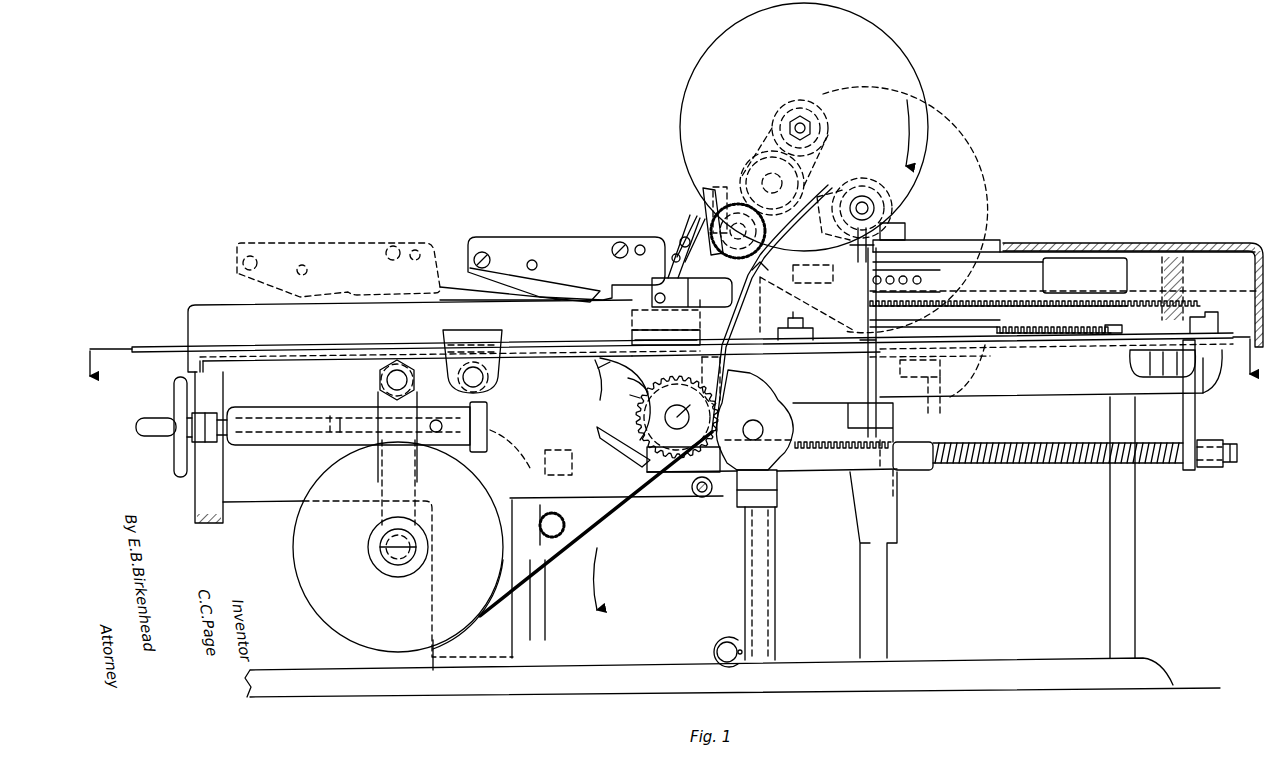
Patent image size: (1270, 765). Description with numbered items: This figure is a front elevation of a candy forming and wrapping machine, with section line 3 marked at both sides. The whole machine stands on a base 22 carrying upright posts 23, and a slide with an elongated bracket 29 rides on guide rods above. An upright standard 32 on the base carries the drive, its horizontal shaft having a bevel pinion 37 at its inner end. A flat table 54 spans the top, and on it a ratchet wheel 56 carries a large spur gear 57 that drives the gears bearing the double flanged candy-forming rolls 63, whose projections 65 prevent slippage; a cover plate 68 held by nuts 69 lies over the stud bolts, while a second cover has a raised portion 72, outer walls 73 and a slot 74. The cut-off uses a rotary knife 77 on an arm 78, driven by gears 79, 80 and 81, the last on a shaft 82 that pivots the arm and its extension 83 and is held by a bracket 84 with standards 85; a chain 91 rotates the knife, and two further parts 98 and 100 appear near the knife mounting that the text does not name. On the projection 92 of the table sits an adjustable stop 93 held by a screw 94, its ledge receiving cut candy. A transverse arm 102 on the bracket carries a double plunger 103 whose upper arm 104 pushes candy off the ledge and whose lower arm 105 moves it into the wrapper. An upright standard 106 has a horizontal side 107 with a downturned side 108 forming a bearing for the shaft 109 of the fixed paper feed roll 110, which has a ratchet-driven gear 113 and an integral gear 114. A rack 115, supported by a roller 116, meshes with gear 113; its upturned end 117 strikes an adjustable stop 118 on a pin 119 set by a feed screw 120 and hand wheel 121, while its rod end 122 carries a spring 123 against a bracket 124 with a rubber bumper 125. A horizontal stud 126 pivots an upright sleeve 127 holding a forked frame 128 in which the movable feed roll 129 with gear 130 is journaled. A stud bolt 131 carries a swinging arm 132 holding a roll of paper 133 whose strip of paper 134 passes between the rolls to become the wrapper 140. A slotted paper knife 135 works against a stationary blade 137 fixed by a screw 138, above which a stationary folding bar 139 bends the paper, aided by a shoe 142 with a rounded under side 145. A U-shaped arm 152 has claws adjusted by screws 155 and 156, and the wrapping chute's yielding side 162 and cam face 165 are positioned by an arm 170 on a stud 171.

The section line 3 is at (671, 368).
The base 22 is at (732, 677).
The upright posts 23 is at (665, 515).
The elongated bracket 29 is at (713, 427).
The upright standard 32 is at (532, 616).
The bevel pinion 37 is at (560, 520).
The flat table 54 is at (143, 350).
The ratchet wheel 56 is at (1060, 340).
The large spur gear 57 is at (1048, 292).
The double flanged candy-forming roll 63 is at (932, 270).
The projections 65 is at (921, 281).
The cover plate 68 is at (917, 243).
The nuts 69 is at (905, 229).
The raised portion 72 is at (1140, 243).
The outer walls 73 is at (1255, 304).
The slot 74 is at (990, 252).
The rotary knife 77 is at (982, 154).
The arm 78 is at (795, 182).
The gear 79 is at (828, 124).
The gear 80 is at (748, 165).
The gear 81 is at (745, 196).
The shaft 82 is at (738, 232).
The extension 83 is at (703, 205).
The bracket 84 is at (788, 323).
The standards 85 is at (766, 286).
The chain 91 is at (680, 230).
The projection 92 is at (826, 344).
The adjustable stop 93 is at (857, 342).
The screw 94 is at (800, 318).
The bracket 98 is at (856, 255).
The member 100 is at (772, 271).
The transverse arm 102 is at (1218, 390).
The double plunger 103 is at (1159, 288).
The upper arm 104 is at (960, 275).
The lower arm 105 is at (632, 318).
The upright standard 106 is at (580, 380).
The upper horizontal side 107 is at (275, 353).
The downturned side 108 is at (657, 398).
The shaft 109 is at (681, 409).
The fixed rotatable paper feed roll 110 is at (636, 414).
The gear 113 is at (636, 378).
The gear 114 is at (638, 395).
The rack 115 is at (843, 451).
The roller 116 is at (703, 497).
The upturned end 117 is at (570, 451).
The adjustable stop 118 is at (487, 415).
The pin 119 is at (425, 424).
The feed screw 120 is at (222, 442).
The hand wheel 121 is at (180, 460).
The rod end 122 is at (1040, 446).
The spring 123 is at (1052, 460).
The bracket 124 is at (1195, 420).
The rubber bumper 125 is at (1208, 467).
The horizontal stud 126 is at (712, 650).
The upright sleeve 127 is at (775, 583).
The forked frame 128 is at (777, 484).
The movable paper feed roll 129 is at (770, 398).
The gear 130 is at (790, 414).
The stud bolt 131 is at (376, 378).
The swinging arm 132 is at (412, 470).
The roll of paper 133 is at (398, 556).
The strip of paper 134 is at (596, 524).
The slotted paper knife 135 is at (1024, 340).
The stationary blade 137 is at (722, 357).
The screw 138 is at (590, 367).
The stationary folding bar 139 is at (722, 324).
The wrapper 140 is at (748, 357).
The shoe 142 is at (698, 278).
The under side 145 is at (704, 297).
The U-shaped arm 152 is at (451, 268).
The screw 155 is at (251, 266).
The screw 156 is at (393, 259).
The yielding side 162 is at (410, 336).
The face 165 is at (470, 276).
The arm 170 is at (460, 342).
The stud 171 is at (484, 378).